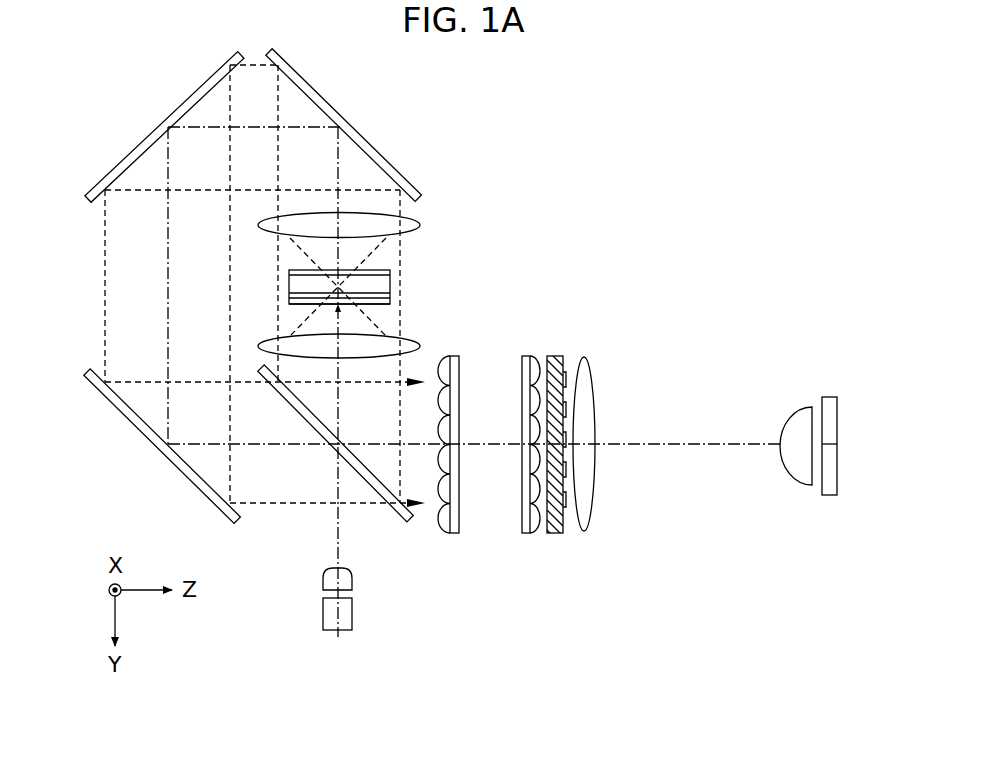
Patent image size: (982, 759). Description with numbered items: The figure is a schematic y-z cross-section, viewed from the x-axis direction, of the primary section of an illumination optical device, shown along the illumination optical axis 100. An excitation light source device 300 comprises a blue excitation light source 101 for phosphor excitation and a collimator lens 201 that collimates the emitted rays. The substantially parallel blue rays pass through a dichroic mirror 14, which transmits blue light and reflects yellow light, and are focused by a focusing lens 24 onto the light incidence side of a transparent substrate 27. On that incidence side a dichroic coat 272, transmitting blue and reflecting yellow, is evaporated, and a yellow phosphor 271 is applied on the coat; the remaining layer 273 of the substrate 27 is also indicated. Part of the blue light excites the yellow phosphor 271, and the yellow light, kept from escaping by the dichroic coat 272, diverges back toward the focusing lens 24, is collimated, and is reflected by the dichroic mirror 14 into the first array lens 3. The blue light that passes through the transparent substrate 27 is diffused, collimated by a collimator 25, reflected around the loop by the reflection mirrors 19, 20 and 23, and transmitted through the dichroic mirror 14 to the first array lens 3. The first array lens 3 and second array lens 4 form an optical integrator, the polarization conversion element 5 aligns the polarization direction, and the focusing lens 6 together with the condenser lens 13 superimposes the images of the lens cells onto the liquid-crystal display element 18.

The reflection mirror 20 is at (143, 140).
The reflection mirror 19 is at (364, 138).
The reflection mirror 23 is at (144, 434).
The dichroic mirror 14 is at (289, 406).
The collimator 25 is at (418, 224).
The focusing lens 24 is at (418, 347).
The transparent substrate 27 is at (382, 287).
The substrate / layer of wavelength conversion element 273 is at (393, 271).
The dichroic coat 272 is at (392, 298).
The yellow phosphor 271 is at (393, 305).
The first array lens 3 is at (455, 534).
The second array lens 4 is at (527, 534).
The polarization conversion element 5 is at (556, 534).
The focusing lens 6 is at (586, 534).
The optical axis (illumination optical axis) 100 is at (683, 447).
The condenser lens 13 is at (797, 484).
The liquid-crystal display element 18 is at (830, 496).
The collimator lens 201 is at (322, 583).
The blue excitation light source 101 is at (322, 616).
The excitation light source device 300 is at (307, 628).